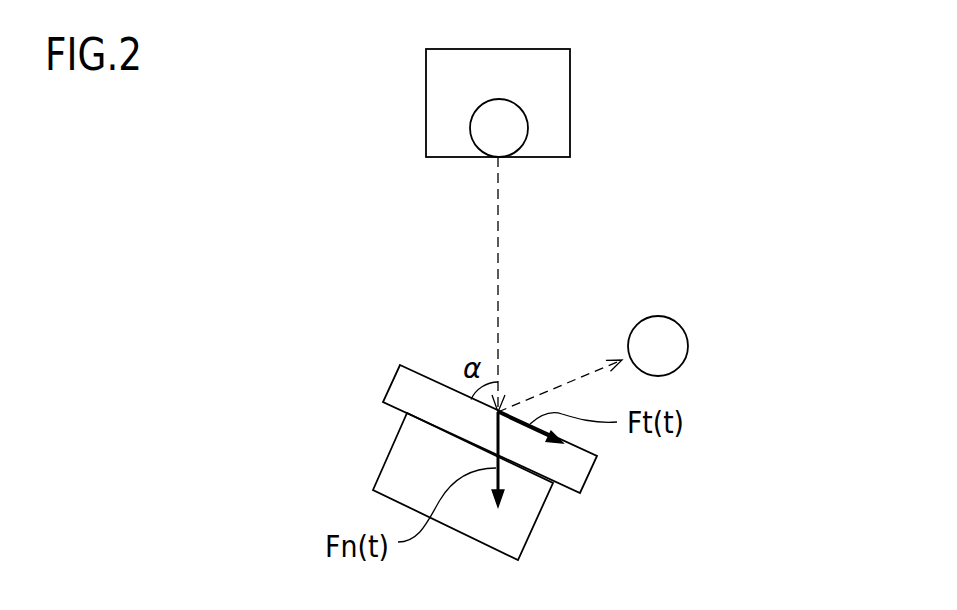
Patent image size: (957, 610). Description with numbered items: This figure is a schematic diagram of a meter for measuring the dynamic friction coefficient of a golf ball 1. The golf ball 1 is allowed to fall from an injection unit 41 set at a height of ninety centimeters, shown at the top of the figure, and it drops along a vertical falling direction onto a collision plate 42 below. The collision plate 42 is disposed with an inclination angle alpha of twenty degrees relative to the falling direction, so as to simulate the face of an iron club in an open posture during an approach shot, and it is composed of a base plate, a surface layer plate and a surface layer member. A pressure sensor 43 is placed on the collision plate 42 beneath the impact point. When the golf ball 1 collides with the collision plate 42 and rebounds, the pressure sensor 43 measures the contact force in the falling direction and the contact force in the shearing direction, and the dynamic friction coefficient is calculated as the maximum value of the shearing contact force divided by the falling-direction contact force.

The golf ball 1 is at (499, 128).
The injection unit 41 is at (426, 106).
The collision plate 42 is at (395, 380).
The pressure sensor 43 is at (388, 455).